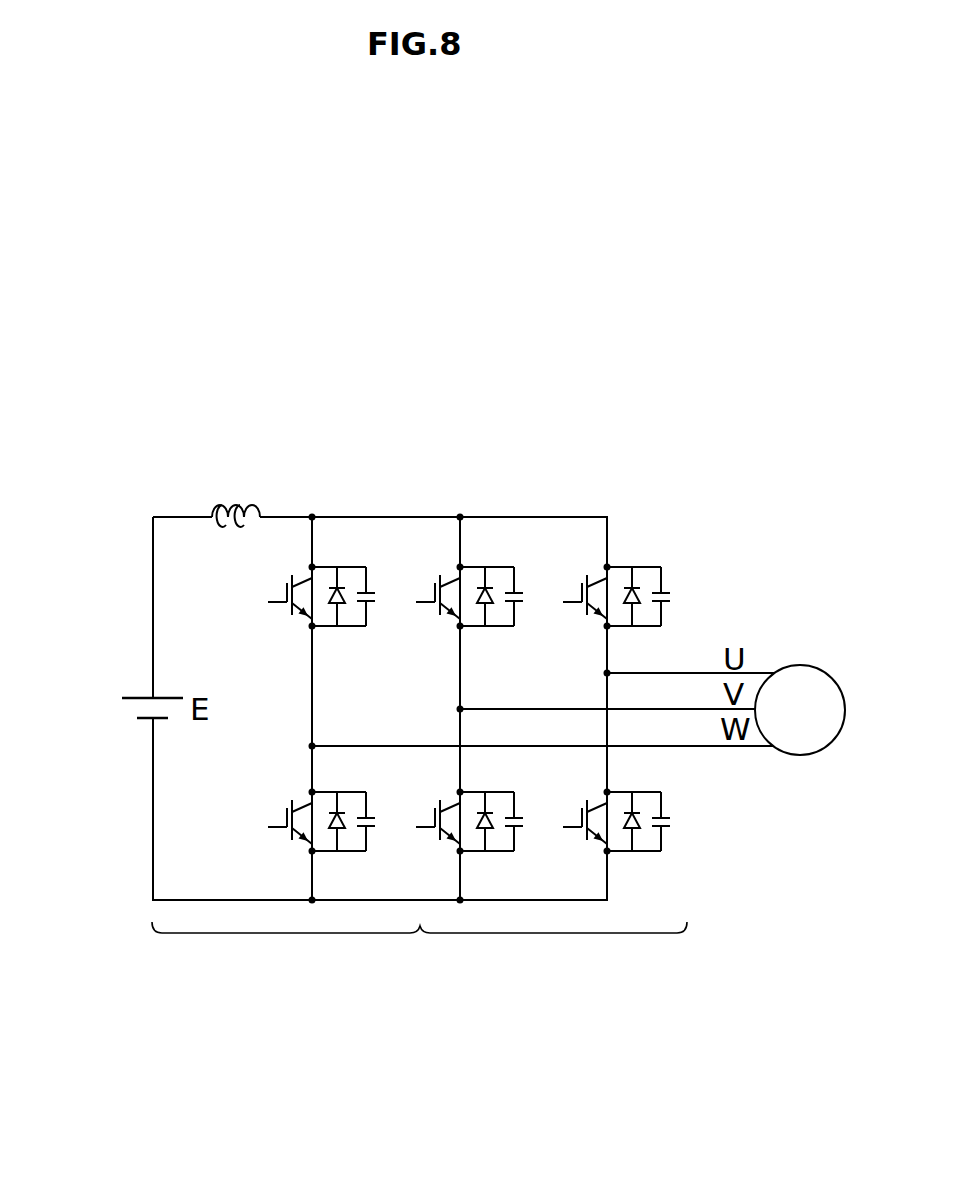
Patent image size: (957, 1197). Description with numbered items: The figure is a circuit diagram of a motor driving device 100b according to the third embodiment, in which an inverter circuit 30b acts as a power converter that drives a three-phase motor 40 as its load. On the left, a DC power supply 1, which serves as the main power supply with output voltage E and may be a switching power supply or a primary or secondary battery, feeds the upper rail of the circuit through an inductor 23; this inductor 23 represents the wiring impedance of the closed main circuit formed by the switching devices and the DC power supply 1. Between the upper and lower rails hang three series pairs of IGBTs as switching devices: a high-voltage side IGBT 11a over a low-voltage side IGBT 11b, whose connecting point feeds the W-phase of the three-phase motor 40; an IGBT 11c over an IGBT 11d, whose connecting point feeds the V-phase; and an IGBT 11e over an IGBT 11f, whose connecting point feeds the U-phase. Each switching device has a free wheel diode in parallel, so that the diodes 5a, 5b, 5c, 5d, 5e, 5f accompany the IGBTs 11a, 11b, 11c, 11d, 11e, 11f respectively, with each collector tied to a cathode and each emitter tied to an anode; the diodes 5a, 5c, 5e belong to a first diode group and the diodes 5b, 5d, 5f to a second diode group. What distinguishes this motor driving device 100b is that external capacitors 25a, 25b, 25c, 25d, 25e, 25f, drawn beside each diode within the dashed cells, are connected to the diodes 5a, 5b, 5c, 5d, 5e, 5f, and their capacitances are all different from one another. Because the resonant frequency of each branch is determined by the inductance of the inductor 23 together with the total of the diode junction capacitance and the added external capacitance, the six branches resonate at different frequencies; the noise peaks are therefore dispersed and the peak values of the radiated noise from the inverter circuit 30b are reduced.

The DC power supply 1 is at (127, 710).
The inductor 23 is at (236, 504).
The motor driving device 100b is at (424, 421).
The inverter circuit 30b is at (419, 949).
The three-phase motor 40 is at (818, 666).
The IGBT 11a is at (288, 582).
The IGBT 11b is at (288, 807).
The IGBT 11c is at (436, 582).
The IGBT 11d is at (436, 807).
The IGBT 11e is at (583, 582).
The IGBT 11f is at (583, 807).
The diode 5a is at (338, 604).
The diode 5b is at (338, 829).
The diode 5c is at (486, 604).
The diode 5d is at (486, 829).
The diode 5e is at (634, 588).
The diode 5f is at (633, 829).
The capacitor 25a is at (376, 604).
The capacitor 25b is at (376, 829).
The capacitor 25c is at (524, 604).
The capacitor 25d is at (524, 829).
The capacitor 25e is at (671, 598).
The capacitor 25f is at (671, 822).